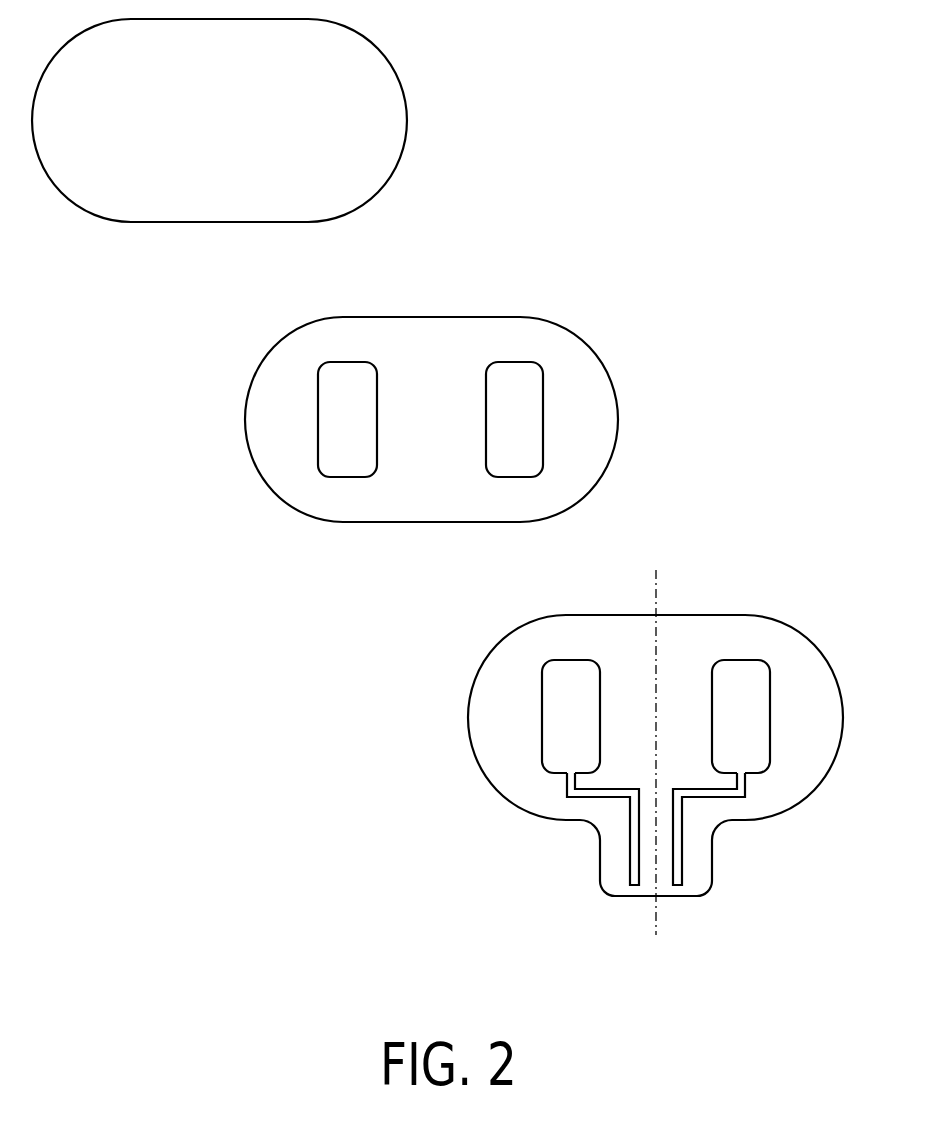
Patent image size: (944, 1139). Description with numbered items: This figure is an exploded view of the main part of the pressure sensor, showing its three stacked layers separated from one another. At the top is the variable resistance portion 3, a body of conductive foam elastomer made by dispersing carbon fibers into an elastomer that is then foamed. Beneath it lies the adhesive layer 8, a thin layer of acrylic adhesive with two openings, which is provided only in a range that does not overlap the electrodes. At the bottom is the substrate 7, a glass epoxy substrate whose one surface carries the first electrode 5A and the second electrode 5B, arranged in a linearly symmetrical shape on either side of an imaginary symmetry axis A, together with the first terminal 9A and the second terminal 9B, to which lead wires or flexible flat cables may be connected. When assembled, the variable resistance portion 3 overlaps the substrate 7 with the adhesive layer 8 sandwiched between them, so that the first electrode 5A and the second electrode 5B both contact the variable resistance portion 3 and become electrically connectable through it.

The variable resistance portion 3 is at (383, 72).
The adhesive layer 8 is at (593, 375).
The substrate 7 is at (483, 672).
The first electrode 5A is at (555, 712).
The second electrode 5B is at (757, 712).
The first terminal 9A is at (635, 848).
The second terminal 9B is at (677, 848).